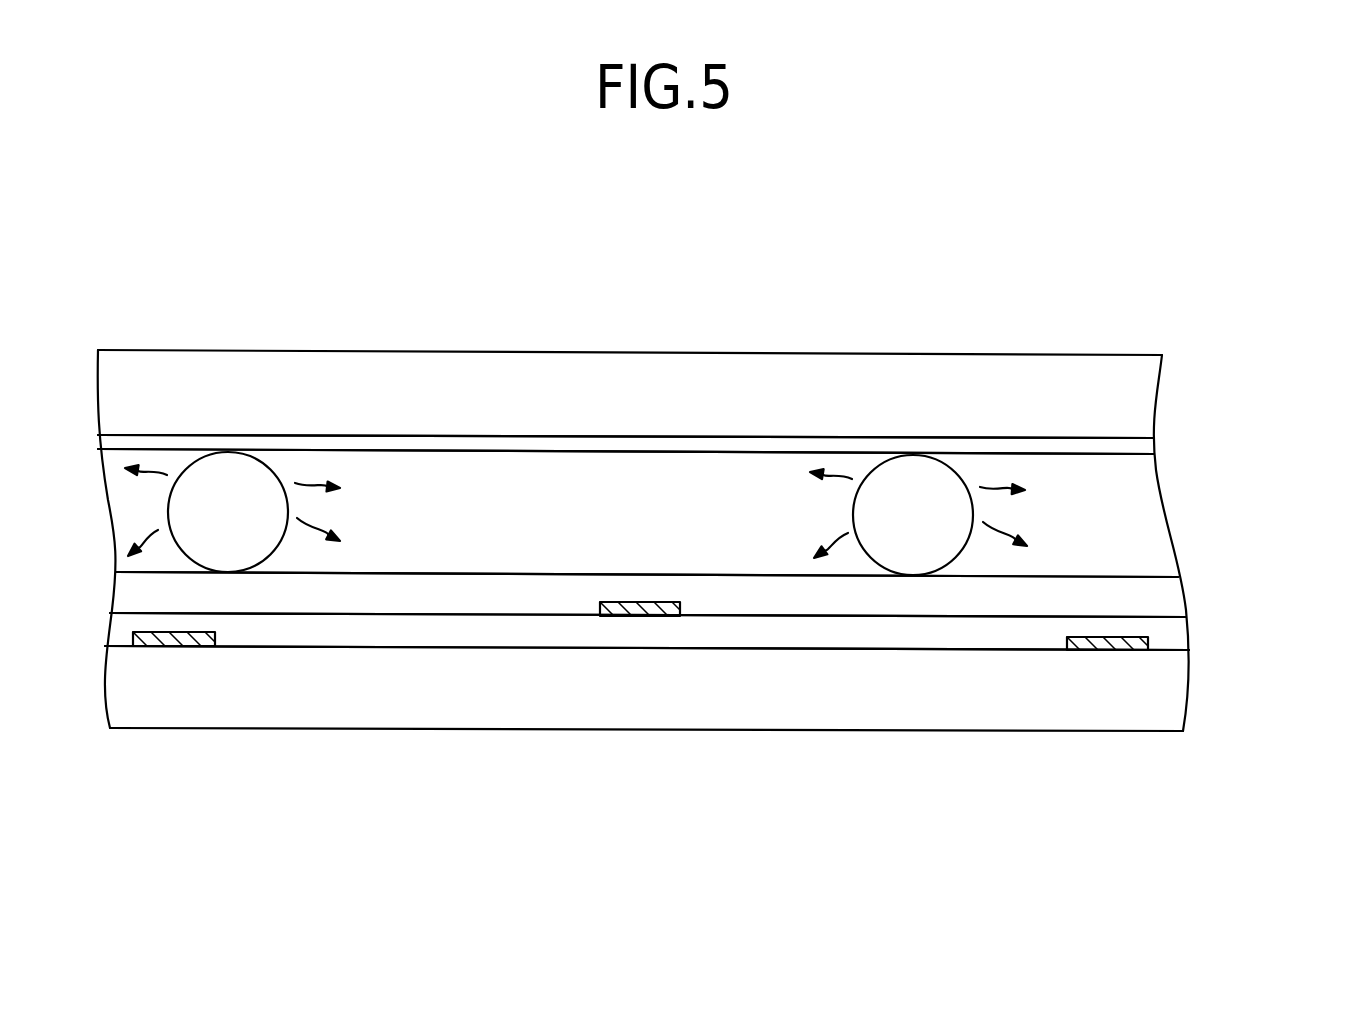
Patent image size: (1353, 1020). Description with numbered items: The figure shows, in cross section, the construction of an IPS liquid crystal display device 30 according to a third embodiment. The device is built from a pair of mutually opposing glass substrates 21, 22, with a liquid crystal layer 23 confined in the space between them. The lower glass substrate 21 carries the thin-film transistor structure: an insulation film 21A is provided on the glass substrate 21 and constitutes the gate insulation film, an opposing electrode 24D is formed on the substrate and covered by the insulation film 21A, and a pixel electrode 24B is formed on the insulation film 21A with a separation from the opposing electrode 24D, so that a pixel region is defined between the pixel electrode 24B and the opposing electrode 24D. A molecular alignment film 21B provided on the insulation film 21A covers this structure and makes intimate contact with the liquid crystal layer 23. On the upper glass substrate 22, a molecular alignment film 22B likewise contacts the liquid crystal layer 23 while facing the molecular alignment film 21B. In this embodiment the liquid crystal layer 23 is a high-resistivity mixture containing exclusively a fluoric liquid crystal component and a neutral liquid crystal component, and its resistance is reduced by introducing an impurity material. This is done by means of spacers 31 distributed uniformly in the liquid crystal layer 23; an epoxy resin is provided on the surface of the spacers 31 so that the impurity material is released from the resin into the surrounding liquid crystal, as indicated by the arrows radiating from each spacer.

The liquid crystal display device 30 is at (732, 258).
The glass substrate 22 is at (1007, 373).
The molecular alignment film 22B is at (1127, 443).
The liquid crystal layer 23 is at (1202, 452).
The spacers 31 is at (252, 527).
The molecular alignment film 21B is at (1167, 598).
The insulation film 21A is at (1173, 638).
The glass substrate 21 is at (1167, 692).
The opposing electrode 24D is at (193, 645).
The pixel electrode 24B is at (677, 615).